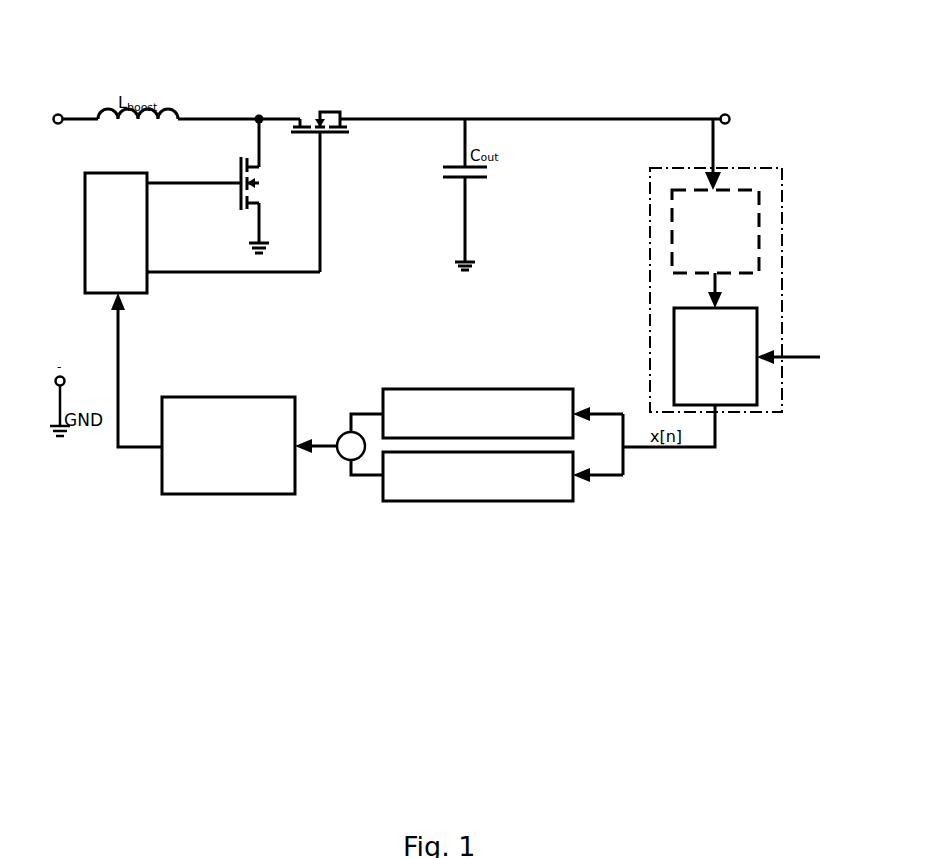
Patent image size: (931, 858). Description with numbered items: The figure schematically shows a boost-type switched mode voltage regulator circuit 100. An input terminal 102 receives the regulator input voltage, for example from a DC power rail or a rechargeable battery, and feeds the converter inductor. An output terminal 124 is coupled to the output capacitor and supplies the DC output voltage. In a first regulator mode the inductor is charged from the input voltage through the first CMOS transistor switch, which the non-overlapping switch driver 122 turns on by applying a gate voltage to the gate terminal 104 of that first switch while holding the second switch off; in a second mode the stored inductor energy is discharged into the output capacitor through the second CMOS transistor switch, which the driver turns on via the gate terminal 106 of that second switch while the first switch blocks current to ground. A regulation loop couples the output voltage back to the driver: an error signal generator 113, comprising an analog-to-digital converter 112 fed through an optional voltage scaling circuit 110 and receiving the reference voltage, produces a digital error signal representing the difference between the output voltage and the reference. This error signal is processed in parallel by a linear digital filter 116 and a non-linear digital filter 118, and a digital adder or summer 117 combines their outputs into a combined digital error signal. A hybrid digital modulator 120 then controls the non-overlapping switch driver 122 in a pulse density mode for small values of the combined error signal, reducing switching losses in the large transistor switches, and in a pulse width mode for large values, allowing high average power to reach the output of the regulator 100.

The switched mode voltage regulator circuit 100 is at (182, 609).
The input terminal 102 is at (95, 77).
The gate terminal of M1 104 is at (227, 186).
The gate terminal of M2 106 is at (340, 181).
The voltage scaling circuit 110 is at (677, 249).
The analog-to-digital converter 112 is at (705, 340).
The error signal generator 113 is at (679, 275).
The linear digital filter 116 is at (503, 394).
The digital adder or summer 117 is at (343, 461).
The non-linear digital filter 118 is at (503, 498).
The hybrid digital modulator 120 is at (203, 417).
The non-overlapping switch driver 122 is at (202, 261).
The output terminal 124 is at (760, 126).